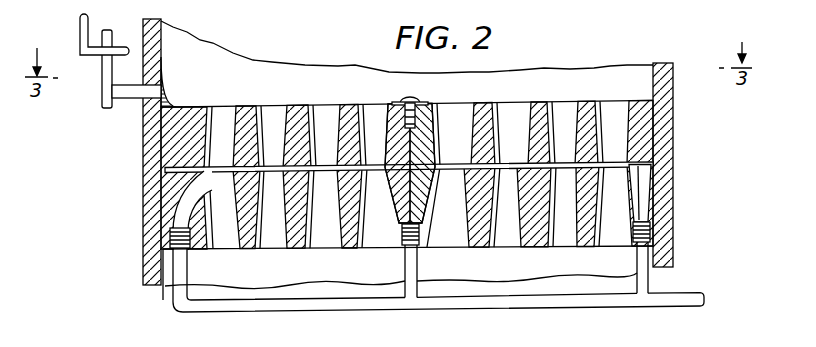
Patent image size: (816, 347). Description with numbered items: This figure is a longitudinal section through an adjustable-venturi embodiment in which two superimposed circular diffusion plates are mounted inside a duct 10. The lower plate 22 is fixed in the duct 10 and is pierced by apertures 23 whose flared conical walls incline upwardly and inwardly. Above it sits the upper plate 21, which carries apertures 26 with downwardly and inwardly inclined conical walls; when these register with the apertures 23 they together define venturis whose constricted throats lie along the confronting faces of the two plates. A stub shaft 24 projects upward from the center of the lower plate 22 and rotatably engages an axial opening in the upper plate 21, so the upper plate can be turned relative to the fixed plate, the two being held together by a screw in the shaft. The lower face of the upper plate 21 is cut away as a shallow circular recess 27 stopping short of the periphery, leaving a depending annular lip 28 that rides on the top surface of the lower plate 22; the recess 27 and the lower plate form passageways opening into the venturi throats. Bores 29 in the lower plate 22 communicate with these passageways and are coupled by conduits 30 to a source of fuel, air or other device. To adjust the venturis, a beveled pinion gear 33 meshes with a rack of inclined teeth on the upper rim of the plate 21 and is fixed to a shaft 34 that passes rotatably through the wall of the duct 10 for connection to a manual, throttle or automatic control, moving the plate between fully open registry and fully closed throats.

The duct 10 is at (674, 173).
The upper plate 21 is at (167, 143).
The lower plate 22 is at (152, 204).
The apertures 23 is at (203, 229).
The stub shaft 24 is at (435, 127).
The apertures 26 is at (271, 110).
The circular recess 27 is at (302, 172).
The annular lip 28 is at (649, 164).
The bores 29 is at (400, 207).
The conduits 30 is at (686, 297).
The beveled pinion gear 33 is at (176, 74).
The shaft 34 is at (135, 92).